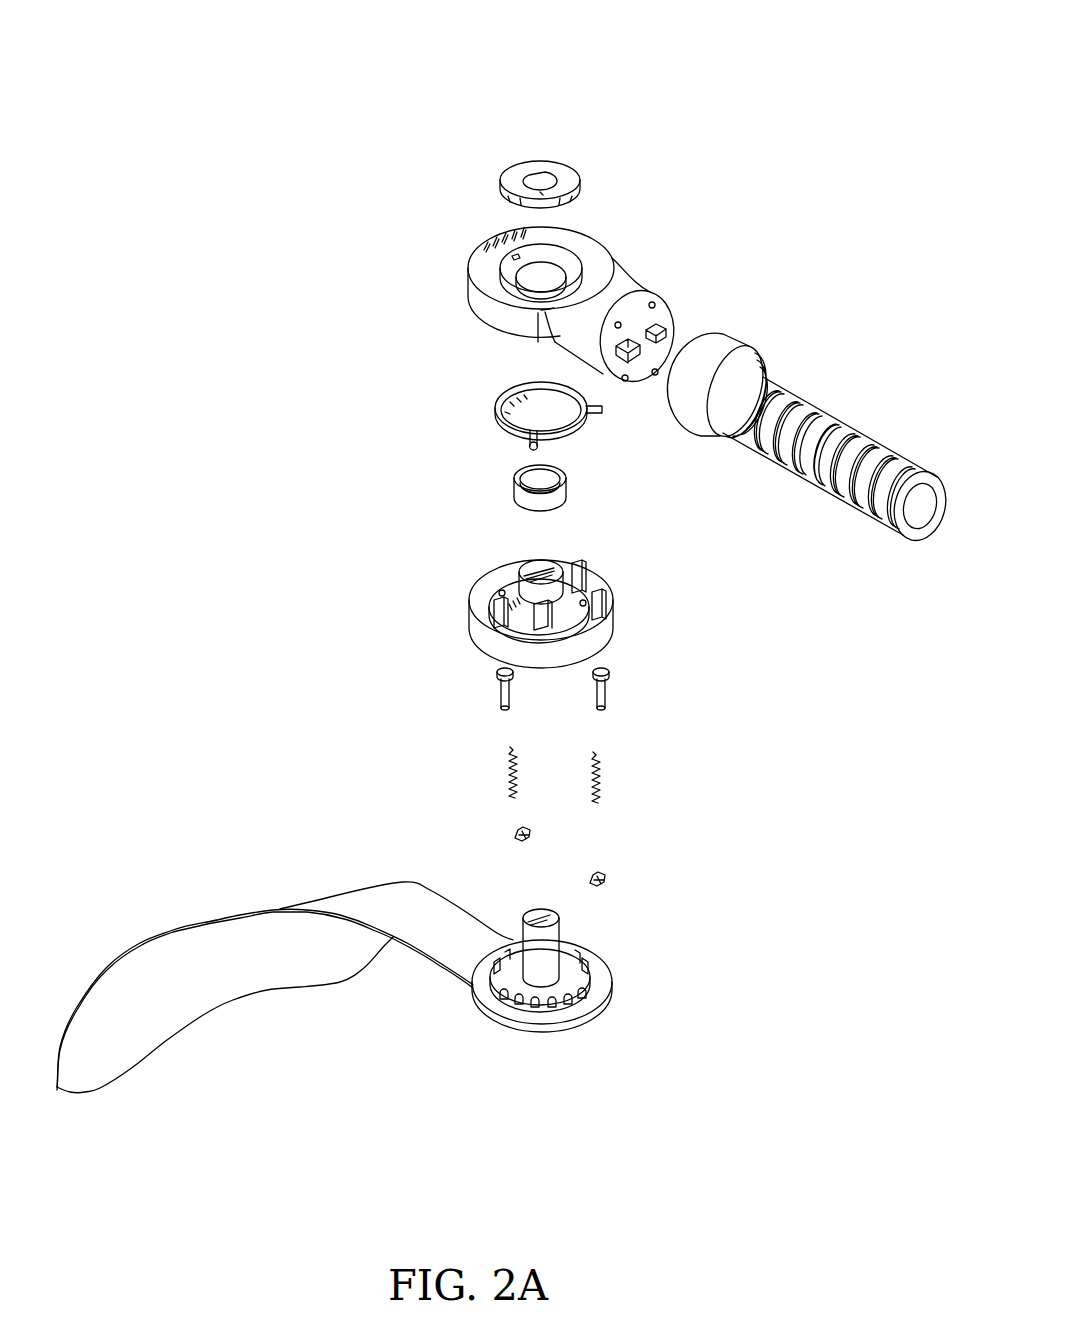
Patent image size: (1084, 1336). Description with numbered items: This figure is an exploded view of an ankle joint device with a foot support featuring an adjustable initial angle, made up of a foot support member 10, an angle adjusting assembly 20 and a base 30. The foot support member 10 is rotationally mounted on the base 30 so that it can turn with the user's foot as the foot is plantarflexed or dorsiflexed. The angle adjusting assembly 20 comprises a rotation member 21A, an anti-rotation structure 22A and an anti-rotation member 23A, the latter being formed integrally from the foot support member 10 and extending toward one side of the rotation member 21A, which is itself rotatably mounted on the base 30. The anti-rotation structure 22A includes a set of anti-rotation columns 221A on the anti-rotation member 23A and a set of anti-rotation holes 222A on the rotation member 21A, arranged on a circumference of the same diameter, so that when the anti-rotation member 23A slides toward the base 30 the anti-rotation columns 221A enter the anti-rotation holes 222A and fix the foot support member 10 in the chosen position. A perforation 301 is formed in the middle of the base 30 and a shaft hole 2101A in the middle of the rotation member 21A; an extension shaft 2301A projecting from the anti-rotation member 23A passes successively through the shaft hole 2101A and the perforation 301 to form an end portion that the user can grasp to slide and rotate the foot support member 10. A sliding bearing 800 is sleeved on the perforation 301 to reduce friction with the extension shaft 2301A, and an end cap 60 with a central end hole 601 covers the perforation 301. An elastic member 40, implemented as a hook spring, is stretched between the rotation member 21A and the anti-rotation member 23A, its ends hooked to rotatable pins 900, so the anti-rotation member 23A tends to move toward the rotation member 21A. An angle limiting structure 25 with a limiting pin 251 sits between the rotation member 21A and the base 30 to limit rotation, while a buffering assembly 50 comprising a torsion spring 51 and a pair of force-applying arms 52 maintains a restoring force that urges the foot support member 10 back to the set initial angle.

The foot support member 10 is at (323, 911).
The angle adjusting assembly 20 is at (252, 390).
The rotation member 21A is at (467, 643).
The anti-rotation structure 22A is at (350, 692).
The anti-rotation member 23A is at (430, 893).
The angle limiting structure 25 is at (508, 553).
The base 30 is at (628, 290).
The elastic member 40 is at (602, 786).
The buffering assembly 50 is at (745, 672).
The torsion spring 51 is at (598, 412).
The force-applying arms 52 is at (600, 633).
The end cap 60 is at (580, 187).
The anti-rotation columns 221A is at (511, 936).
The anti-rotation holes 222A is at (487, 622).
The limiting pin 251 is at (573, 563).
The perforation 301 is at (554, 271).
The end hole 601 is at (534, 176).
The sliding bearing 800 is at (562, 483).
The pin 900 is at (612, 706).
The shaft hole 2101A is at (537, 571).
The extension shaft 2301A is at (531, 913).